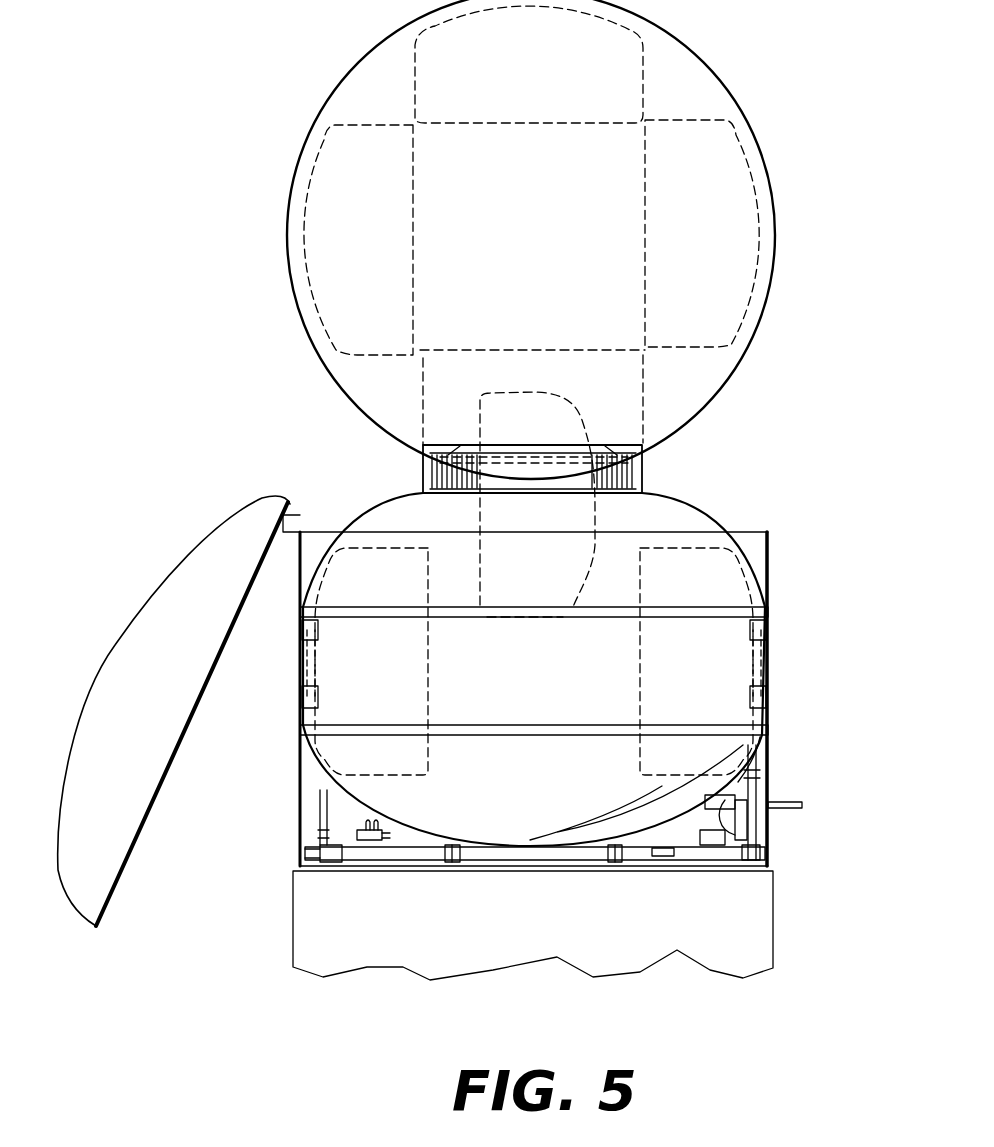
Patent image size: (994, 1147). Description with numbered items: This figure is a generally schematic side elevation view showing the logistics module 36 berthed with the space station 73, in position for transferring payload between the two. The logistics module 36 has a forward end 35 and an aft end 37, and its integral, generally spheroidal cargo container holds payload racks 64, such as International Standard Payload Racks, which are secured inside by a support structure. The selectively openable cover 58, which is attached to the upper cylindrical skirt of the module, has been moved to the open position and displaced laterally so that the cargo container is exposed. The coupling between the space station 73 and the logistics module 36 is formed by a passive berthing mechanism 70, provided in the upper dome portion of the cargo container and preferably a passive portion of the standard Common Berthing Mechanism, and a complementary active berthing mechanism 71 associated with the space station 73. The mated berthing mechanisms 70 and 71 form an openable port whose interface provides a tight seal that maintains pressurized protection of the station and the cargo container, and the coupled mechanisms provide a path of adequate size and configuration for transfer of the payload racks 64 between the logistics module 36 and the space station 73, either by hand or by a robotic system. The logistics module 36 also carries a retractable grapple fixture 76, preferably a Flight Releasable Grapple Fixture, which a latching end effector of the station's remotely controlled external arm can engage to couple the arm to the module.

The forward end 35 is at (800, 503).
The logistics module 36 is at (820, 613).
The aft end 37 is at (226, 892).
The selectively openable cover 58 is at (111, 676).
The payload racks 64 is at (422, 187).
The berthing mechanism 70 is at (427, 473).
The active berthing mechanism 71 is at (642, 470).
The space station 73 is at (708, 62).
The retractable grapple fixture 76 is at (797, 803).